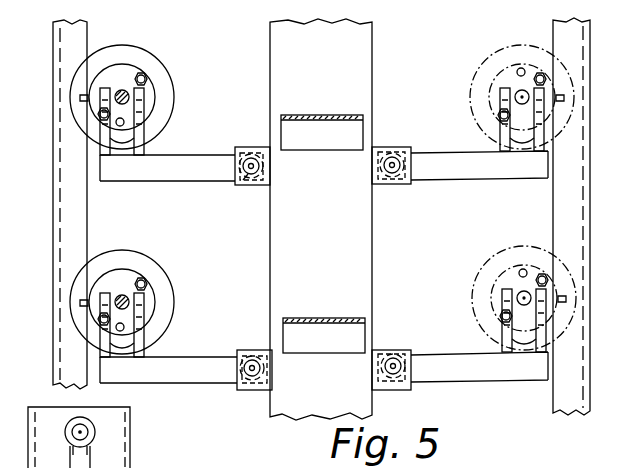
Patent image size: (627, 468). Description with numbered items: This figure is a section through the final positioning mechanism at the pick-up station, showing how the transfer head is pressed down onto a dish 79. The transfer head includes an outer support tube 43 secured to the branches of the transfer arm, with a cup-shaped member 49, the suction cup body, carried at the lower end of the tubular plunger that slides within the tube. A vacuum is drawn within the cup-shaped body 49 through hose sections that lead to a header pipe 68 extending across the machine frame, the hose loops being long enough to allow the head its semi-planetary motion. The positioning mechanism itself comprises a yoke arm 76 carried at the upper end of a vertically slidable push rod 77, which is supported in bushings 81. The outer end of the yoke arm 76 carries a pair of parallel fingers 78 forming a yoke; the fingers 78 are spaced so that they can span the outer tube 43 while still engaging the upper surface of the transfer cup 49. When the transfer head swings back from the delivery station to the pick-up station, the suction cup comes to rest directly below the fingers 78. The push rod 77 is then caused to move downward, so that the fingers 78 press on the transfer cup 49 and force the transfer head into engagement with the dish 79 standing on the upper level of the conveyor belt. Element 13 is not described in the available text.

The block / pad on column 13 is at (319, 114).
The outer support tube 43 is at (123, 89).
The cup-shaped member 49 is at (138, 68).
The header pipe 68 is at (90, 425).
The yoke arm 76 is at (191, 155).
The push rod 77 is at (247, 185).
The parallel fingers 78 is at (92, 91).
The dish 79 is at (170, 79).
The bushings 81 is at (252, 147).